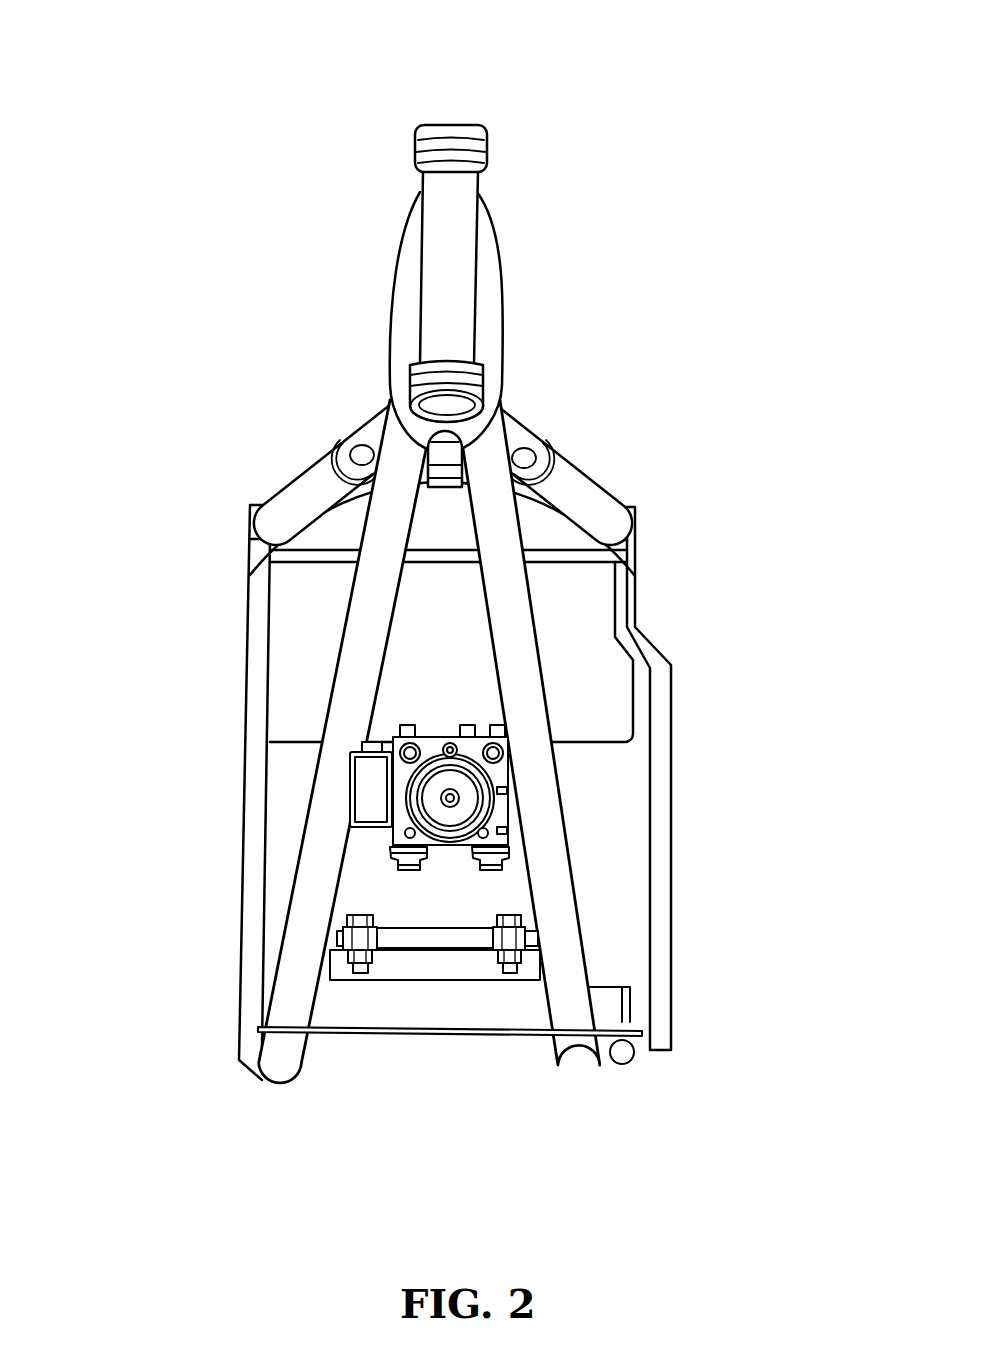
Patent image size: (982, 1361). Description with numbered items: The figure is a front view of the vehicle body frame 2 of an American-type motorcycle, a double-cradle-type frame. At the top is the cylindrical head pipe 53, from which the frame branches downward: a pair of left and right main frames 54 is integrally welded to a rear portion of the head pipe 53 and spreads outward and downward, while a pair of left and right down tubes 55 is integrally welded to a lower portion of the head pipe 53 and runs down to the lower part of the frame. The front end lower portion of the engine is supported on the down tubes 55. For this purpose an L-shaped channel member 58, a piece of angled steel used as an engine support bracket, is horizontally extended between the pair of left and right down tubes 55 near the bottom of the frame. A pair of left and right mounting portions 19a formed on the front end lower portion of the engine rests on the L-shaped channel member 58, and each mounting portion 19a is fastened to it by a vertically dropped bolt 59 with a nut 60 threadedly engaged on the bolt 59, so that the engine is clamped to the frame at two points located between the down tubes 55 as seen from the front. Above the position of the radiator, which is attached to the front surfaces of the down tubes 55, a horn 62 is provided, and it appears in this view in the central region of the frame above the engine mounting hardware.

The vehicle body frame 2 is at (628, 108).
The head pipe 53 is at (435, 238).
The main frames 54 is at (305, 492).
The down tubes 55 is at (358, 650).
The horn 62 is at (477, 795).
The mounting portions 19a is at (340, 933).
The bolts 59 is at (357, 913).
The nuts 60 is at (347, 968).
The L-shaped channel member 58 is at (408, 965).